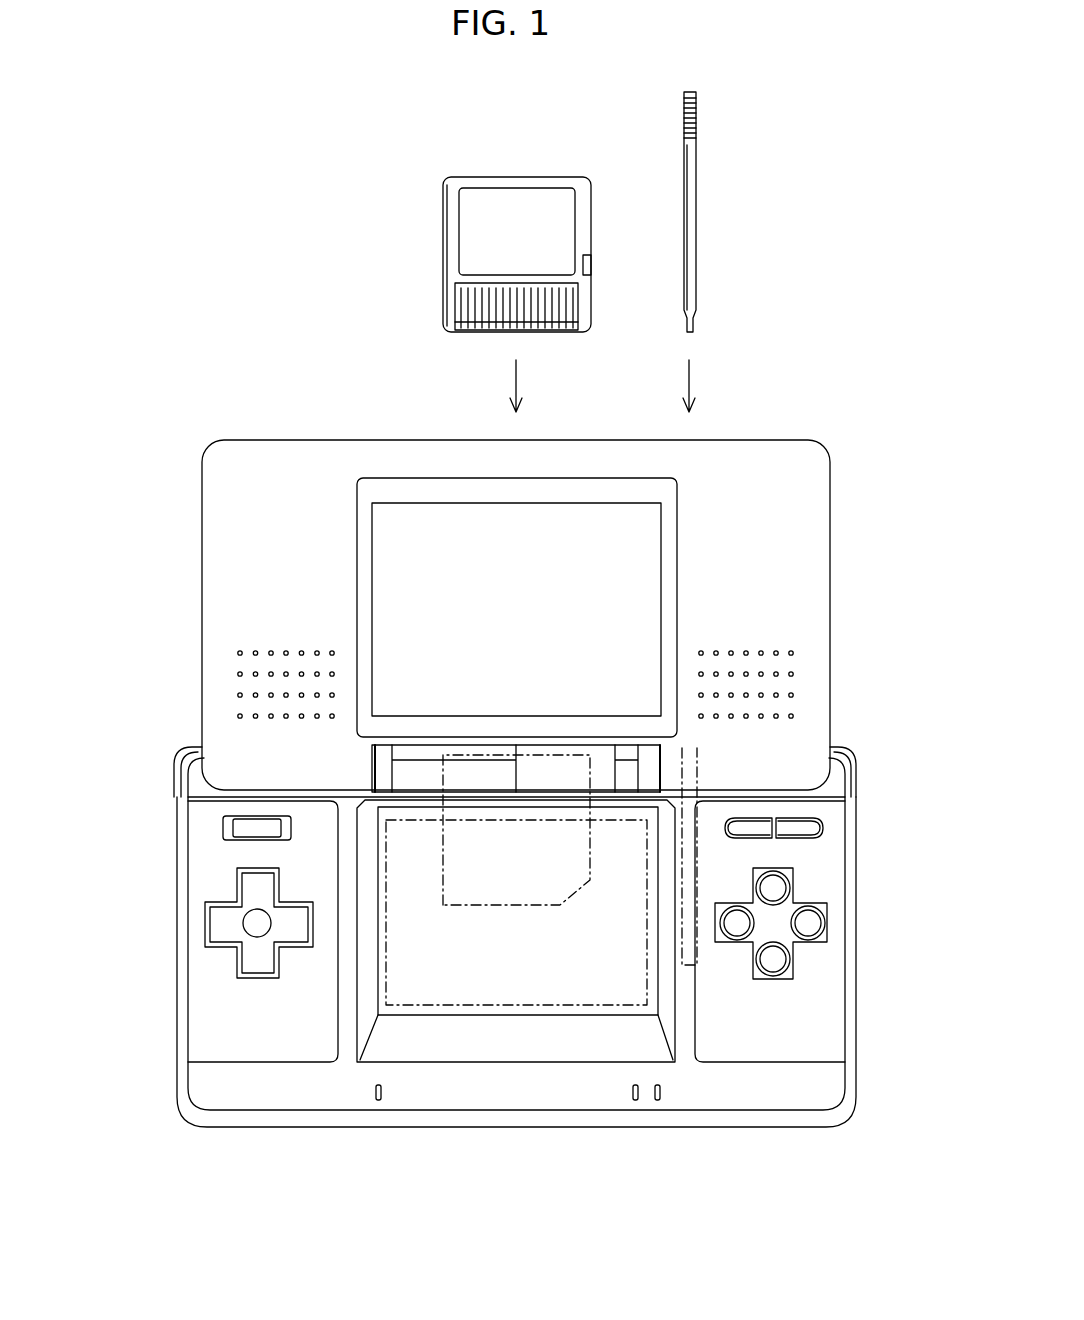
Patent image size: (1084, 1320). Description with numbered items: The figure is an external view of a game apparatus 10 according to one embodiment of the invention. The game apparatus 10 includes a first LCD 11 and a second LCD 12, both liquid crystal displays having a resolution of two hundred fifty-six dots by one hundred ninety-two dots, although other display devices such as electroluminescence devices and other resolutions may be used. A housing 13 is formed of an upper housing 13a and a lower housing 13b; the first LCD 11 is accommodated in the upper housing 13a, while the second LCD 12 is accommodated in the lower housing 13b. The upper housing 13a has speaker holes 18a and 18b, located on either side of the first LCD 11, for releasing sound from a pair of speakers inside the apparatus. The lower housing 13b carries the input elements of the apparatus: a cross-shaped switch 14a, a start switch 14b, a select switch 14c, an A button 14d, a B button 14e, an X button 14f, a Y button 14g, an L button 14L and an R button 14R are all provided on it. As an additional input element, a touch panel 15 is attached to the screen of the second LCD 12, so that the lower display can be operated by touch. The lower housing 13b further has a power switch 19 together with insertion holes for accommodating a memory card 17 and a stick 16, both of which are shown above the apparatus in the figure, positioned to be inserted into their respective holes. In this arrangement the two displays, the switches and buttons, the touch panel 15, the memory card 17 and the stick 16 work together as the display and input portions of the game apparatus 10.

The game apparatus 10 is at (227, 236).
The first LCD 11 is at (395, 540).
The second LCD 12 is at (563, 1018).
The housing 13 is at (808, 435).
The upper housing 13a is at (798, 582).
The lower housing 13b is at (200, 1020).
The cross-shaped switch 14a is at (206, 916).
The start switch 14b is at (822, 840).
The select switch 14c is at (745, 820).
The A button 14d is at (826, 923).
The B button 14e is at (788, 960).
The X button 14f is at (788, 888).
The Y button 14g is at (740, 928).
The L button 14L is at (178, 752).
The R button 14R is at (848, 742).
The touch panel 15 is at (405, 1003).
The stick 16 is at (697, 142).
The memory card 17 is at (557, 178).
The speaker hole 18a is at (240, 695).
The speaker hole 18b is at (791, 653).
The power switch 19 is at (223, 828).